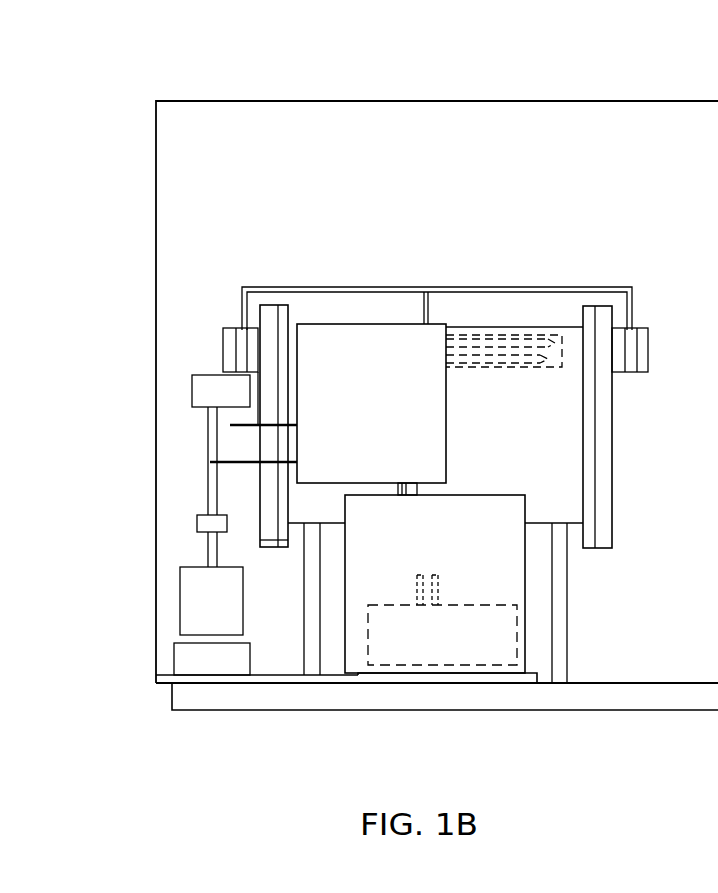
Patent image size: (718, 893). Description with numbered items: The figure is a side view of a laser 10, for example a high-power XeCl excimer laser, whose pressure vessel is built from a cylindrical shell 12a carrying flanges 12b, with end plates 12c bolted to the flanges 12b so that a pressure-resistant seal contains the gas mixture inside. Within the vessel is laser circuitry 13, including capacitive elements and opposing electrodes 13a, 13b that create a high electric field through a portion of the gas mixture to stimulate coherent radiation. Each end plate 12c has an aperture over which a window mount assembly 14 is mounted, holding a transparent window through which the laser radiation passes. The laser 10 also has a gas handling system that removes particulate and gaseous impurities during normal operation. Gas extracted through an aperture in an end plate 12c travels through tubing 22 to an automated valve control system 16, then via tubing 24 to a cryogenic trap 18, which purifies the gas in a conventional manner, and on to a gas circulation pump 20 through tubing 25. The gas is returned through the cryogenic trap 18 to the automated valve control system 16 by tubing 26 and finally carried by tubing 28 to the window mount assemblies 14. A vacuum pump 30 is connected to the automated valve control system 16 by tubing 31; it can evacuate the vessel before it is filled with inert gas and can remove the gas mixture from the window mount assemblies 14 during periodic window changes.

The laser 10 is at (461, 78).
The cylindrical shell 12a is at (570, 325).
The flanges 12b is at (291, 305).
The end plates 12c is at (259, 544).
The laser circuitry 13 is at (556, 368).
The electrode 13a is at (480, 338).
The electrode 13b is at (516, 355).
The window mount assembly 14 is at (223, 358).
The automated valve control system 16 is at (368, 323).
The cryogenic trap 18 is at (525, 570).
The gas circulation pump 20 is at (368, 668).
The tubing 22 is at (217, 430).
The tubing 24 is at (398, 489).
The tubing 25 is at (417, 586).
The tubing 26 is at (418, 491).
The tubing 28 is at (242, 305).
The vacuum pump 30 is at (180, 607).
The tubing 31 is at (222, 465).